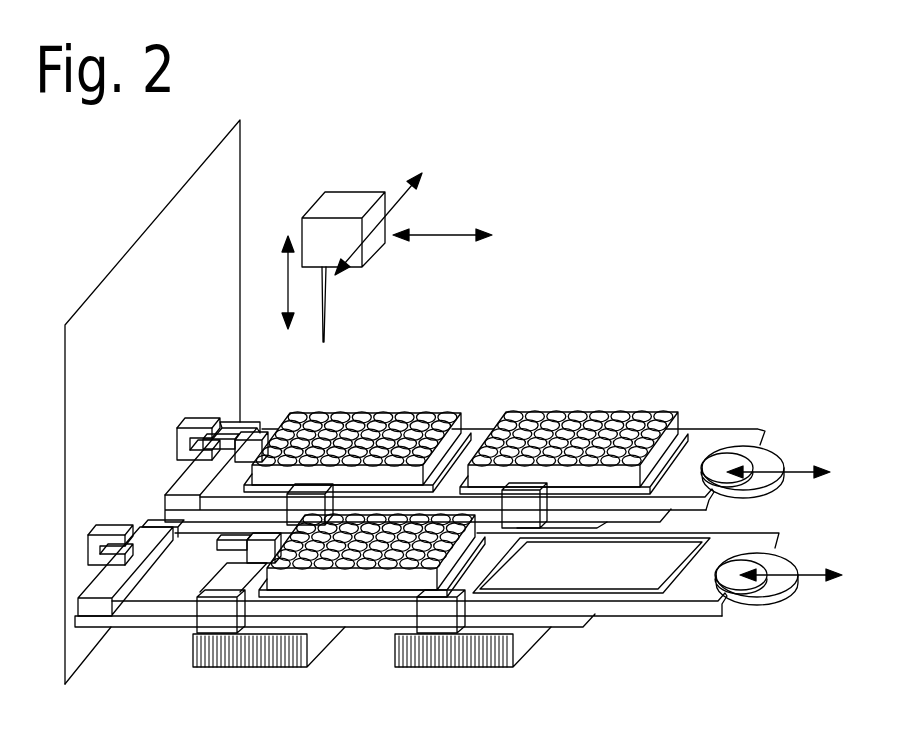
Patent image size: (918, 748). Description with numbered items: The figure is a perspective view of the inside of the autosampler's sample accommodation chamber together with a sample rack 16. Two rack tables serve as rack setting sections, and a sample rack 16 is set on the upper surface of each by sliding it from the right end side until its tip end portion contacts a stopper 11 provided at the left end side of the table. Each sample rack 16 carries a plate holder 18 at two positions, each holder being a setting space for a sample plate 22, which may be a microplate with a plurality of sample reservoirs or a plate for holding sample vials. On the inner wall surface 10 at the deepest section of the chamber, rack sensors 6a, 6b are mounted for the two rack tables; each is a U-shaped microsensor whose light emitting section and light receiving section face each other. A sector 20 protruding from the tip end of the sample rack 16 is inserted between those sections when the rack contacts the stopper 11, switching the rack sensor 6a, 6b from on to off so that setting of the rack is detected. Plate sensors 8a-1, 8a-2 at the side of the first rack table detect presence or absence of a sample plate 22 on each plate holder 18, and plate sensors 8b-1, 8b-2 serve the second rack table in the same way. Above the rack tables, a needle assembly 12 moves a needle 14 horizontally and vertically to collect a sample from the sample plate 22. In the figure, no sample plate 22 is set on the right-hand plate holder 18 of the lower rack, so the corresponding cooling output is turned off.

The inner wall surface 10 is at (82, 372).
The needle assembly 12 is at (358, 200).
The needle 14 is at (326, 302).
The rack sensor 6a is at (200, 418).
The rack sensor 6b is at (110, 525).
The plate sensor 8a-1 is at (307, 497).
The plate sensor 8a-2 is at (523, 497).
The plate sensor 8b-1 is at (217, 617).
The plate sensor 8b-2 is at (435, 617).
The sample plate 22 is at (684, 407).
The sample rack 16 is at (745, 432).
The stopper 11 is at (128, 590).
The sector 20 is at (218, 548).
The plate holder 18 is at (625, 580).